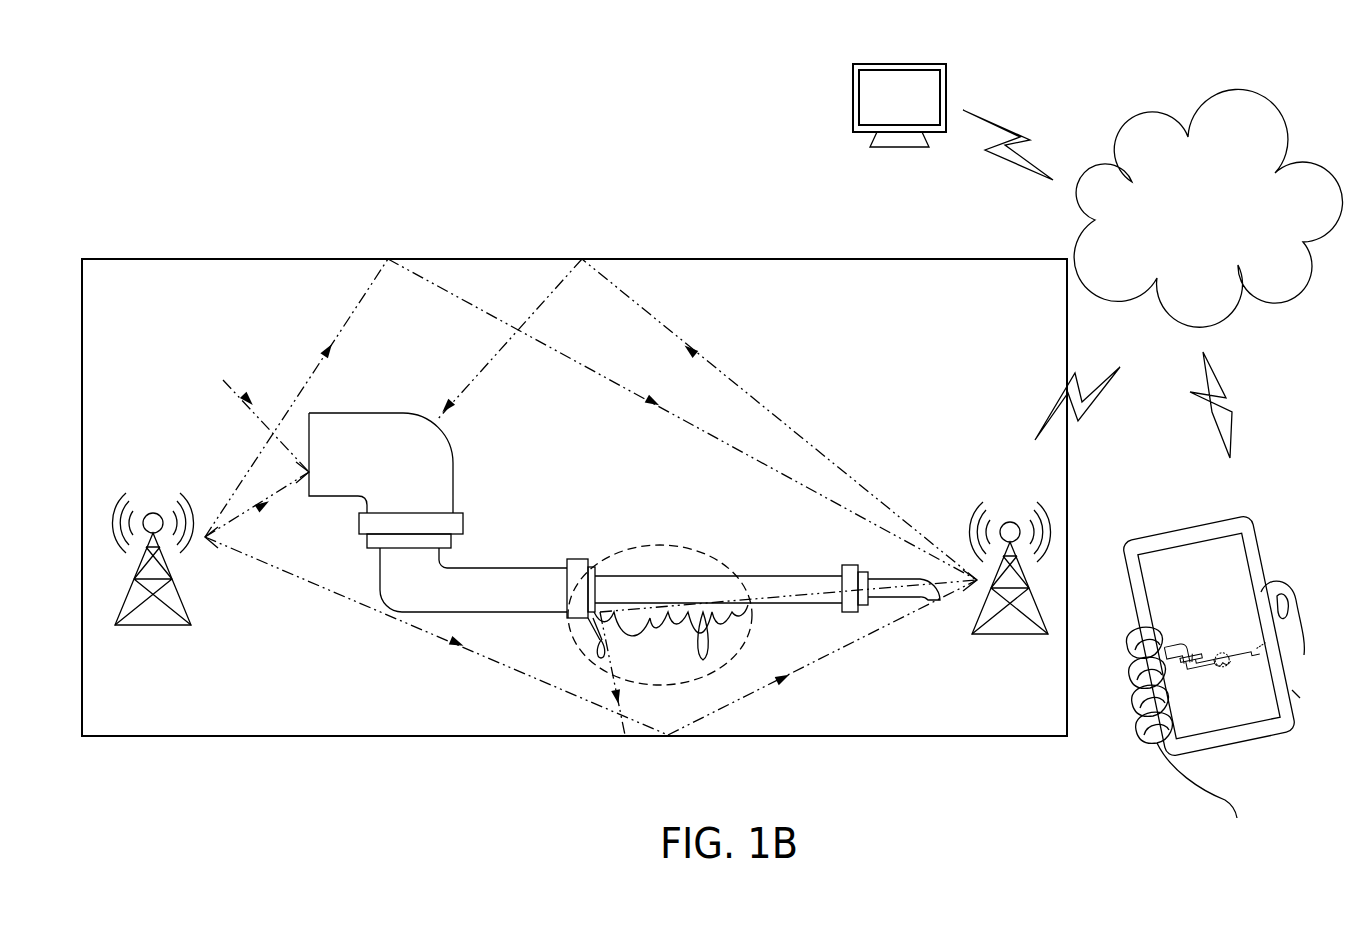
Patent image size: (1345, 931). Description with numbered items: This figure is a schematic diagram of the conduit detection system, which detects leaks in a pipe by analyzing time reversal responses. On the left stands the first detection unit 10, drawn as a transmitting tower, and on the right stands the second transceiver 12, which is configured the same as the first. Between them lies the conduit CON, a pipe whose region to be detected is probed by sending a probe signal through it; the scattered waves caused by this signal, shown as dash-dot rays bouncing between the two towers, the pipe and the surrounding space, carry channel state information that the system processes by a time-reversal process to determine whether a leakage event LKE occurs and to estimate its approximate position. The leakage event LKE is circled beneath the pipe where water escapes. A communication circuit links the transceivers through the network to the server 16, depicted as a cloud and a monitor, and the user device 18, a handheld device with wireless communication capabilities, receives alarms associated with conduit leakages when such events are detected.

The first detection unit 10 is at (153, 625).
The second transceiver 12 is at (1010, 634).
The server 16 is at (897, 147).
The user device 18 is at (1285, 532).
The conduit CON is at (519, 568).
The leakage event LKE is at (605, 558).